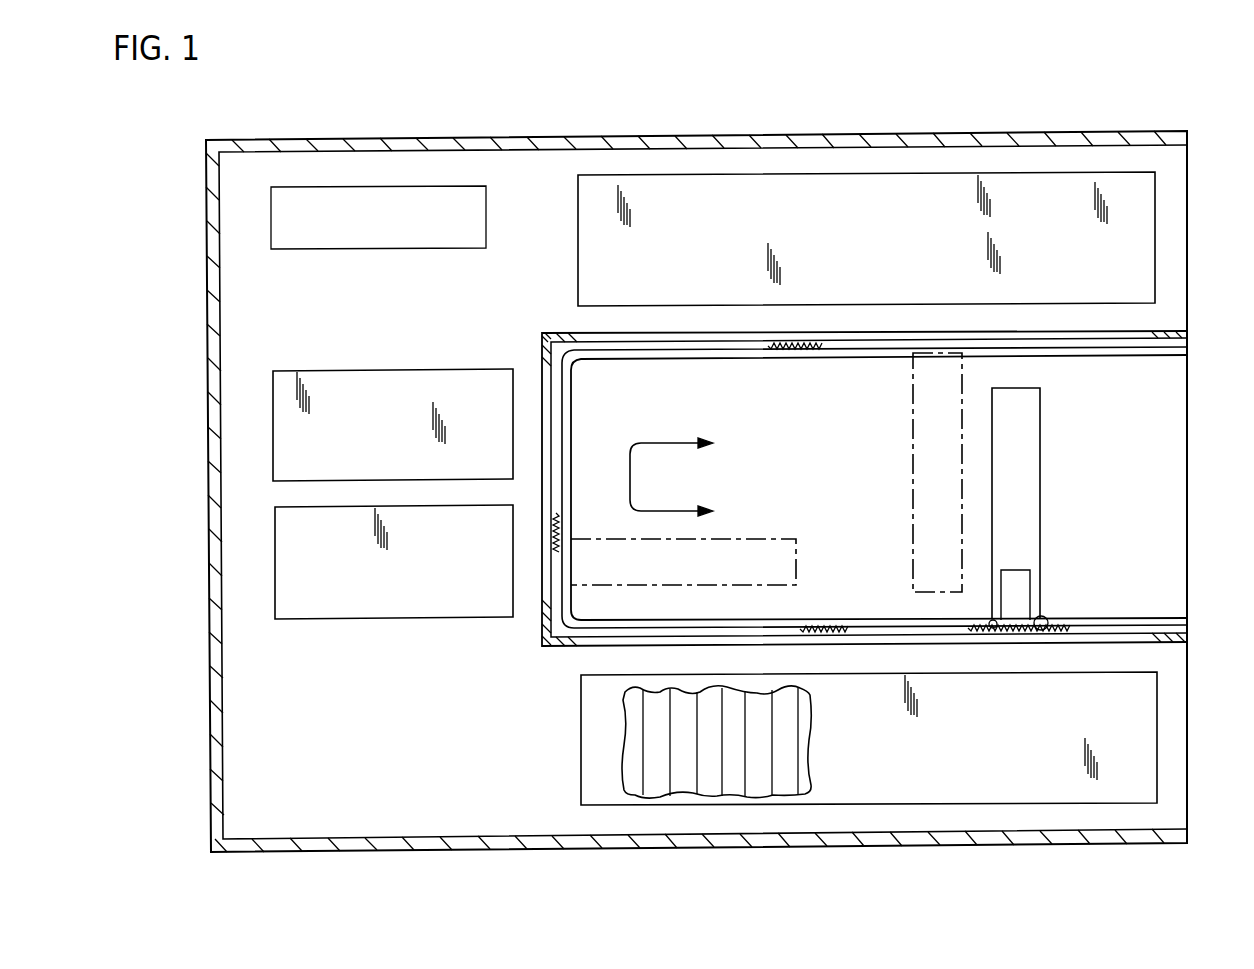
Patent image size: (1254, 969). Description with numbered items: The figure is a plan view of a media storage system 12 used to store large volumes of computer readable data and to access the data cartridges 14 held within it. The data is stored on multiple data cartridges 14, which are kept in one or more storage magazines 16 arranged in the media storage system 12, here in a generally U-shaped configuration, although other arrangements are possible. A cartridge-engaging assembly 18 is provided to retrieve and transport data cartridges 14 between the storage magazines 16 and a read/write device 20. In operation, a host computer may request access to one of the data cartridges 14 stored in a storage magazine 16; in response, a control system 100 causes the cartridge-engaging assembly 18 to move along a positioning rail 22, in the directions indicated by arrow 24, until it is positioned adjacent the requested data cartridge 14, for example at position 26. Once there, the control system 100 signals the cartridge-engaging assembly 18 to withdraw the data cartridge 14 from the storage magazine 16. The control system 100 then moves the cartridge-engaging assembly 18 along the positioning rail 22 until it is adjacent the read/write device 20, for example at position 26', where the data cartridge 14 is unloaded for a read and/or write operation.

The media storage system 12 is at (315, 137).
The control system 100 is at (400, 235).
The data cartridge 14 is at (722, 778).
The storage magazine 16 is at (833, 173).
The cartridge-engaging assembly 18 is at (1058, 497).
The read/write device 20 is at (301, 508).
The positioning rail 22 is at (1160, 611).
The arrow 24 is at (631, 476).
The position 26 is at (916, 472).
The position 26' is at (703, 540).